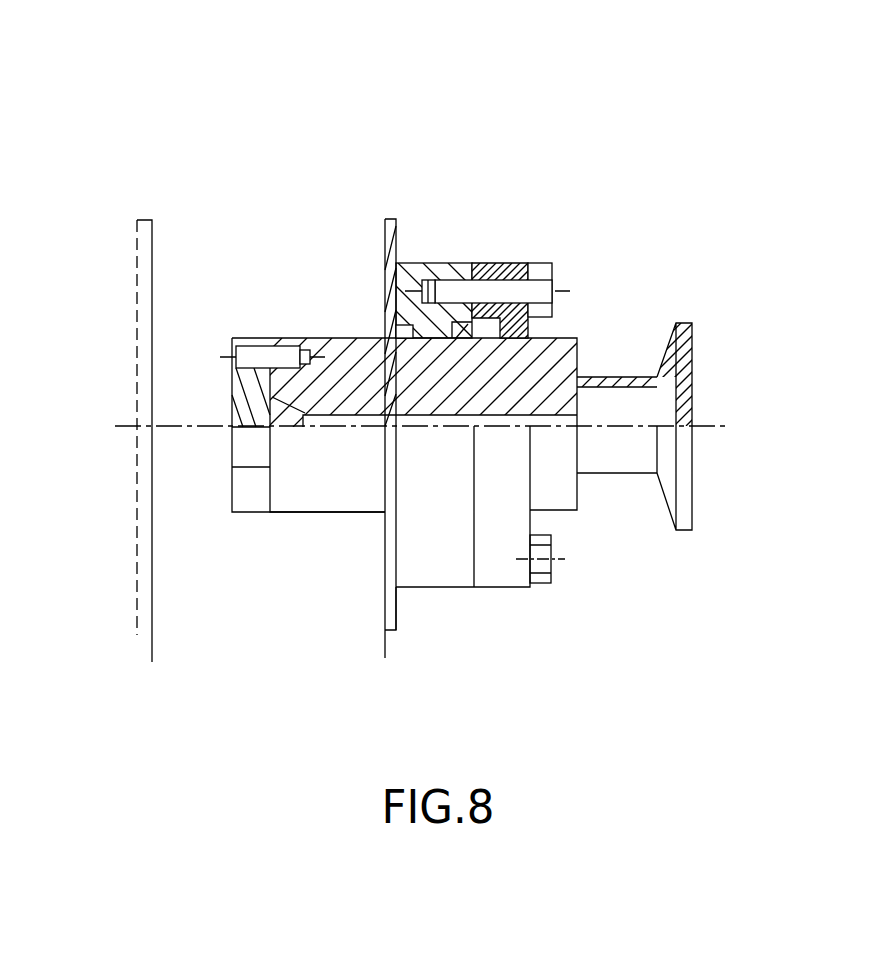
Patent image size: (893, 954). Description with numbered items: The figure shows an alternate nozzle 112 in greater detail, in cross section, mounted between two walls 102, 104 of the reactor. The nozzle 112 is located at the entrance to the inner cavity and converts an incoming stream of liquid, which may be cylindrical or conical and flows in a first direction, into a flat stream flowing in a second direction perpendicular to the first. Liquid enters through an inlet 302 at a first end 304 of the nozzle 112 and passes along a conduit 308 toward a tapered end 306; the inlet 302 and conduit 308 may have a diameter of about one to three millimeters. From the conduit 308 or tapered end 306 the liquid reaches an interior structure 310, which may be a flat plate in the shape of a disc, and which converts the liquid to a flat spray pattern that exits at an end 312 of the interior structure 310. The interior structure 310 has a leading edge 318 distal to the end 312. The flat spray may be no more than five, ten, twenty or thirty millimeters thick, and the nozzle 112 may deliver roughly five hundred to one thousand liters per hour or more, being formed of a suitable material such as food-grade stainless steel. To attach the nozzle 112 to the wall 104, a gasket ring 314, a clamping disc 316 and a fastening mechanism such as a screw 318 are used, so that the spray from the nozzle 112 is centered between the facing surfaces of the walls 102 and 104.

The wall 102 is at (142, 638).
The wall 104 is at (388, 618).
The nozzle 112 is at (158, 105).
The inlet 302 is at (697, 421).
The first end 304 is at (712, 497).
The tapered end 306 is at (282, 413).
The conduit 308 is at (503, 427).
The interior structure 310 is at (232, 467).
The end 312 is at (268, 512).
The gasket ring 314 is at (405, 325).
The clamping disc 316 is at (246, 490).
The screw 318 is at (257, 417).